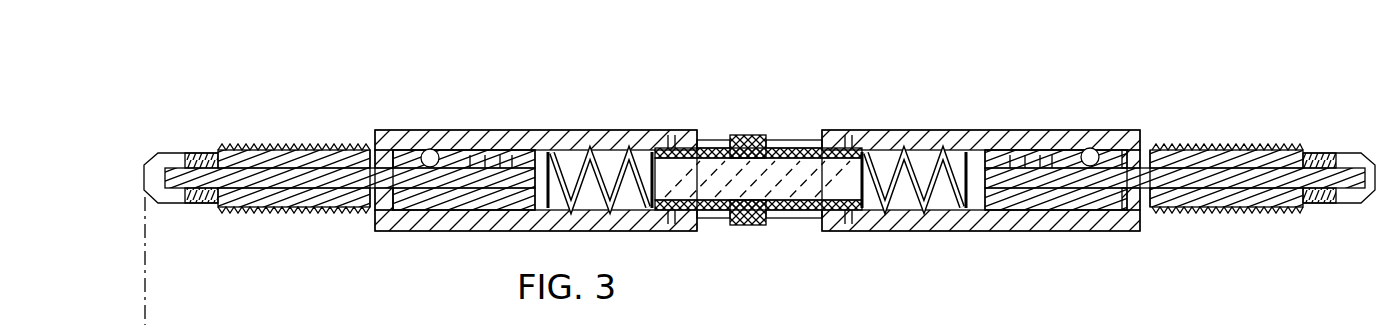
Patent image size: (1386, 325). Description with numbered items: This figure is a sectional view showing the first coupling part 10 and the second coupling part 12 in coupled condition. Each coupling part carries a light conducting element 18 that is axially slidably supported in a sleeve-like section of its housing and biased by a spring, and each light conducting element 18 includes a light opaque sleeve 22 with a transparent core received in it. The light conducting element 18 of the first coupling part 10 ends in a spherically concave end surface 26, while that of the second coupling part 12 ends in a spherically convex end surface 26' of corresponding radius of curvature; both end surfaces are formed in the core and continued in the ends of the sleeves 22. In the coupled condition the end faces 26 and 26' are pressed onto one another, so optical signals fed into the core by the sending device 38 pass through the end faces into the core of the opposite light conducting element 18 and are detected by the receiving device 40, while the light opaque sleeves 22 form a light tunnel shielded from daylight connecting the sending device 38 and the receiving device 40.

The first coupling part 10 is at (987, 111).
The second coupling part 12 is at (532, 109).
The light conducting element 18 is at (716, 129).
The light opaque sleeve 22 is at (706, 214).
The spherically concave end surface 26 is at (753, 114).
The spherically convex end surface 26' is at (764, 235).
The sending device 38 is at (1036, 192).
The receiving device 40 is at (468, 192).